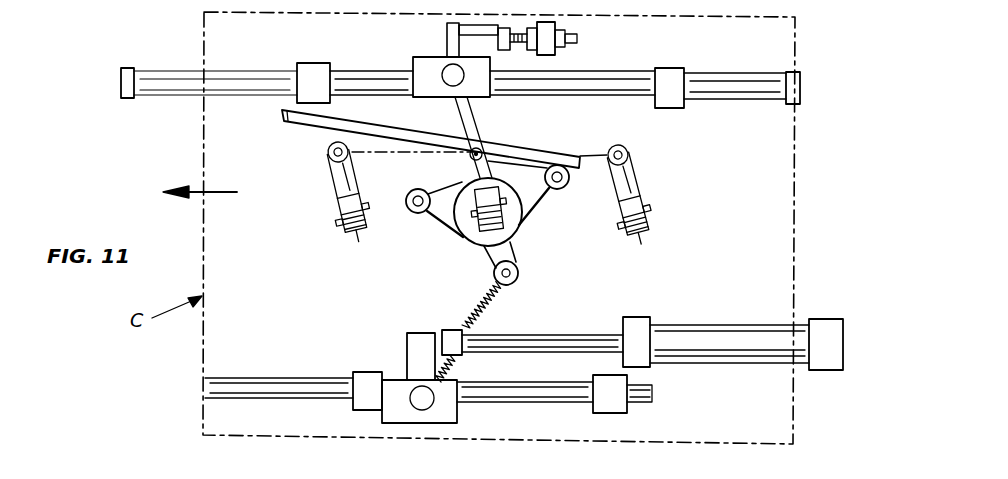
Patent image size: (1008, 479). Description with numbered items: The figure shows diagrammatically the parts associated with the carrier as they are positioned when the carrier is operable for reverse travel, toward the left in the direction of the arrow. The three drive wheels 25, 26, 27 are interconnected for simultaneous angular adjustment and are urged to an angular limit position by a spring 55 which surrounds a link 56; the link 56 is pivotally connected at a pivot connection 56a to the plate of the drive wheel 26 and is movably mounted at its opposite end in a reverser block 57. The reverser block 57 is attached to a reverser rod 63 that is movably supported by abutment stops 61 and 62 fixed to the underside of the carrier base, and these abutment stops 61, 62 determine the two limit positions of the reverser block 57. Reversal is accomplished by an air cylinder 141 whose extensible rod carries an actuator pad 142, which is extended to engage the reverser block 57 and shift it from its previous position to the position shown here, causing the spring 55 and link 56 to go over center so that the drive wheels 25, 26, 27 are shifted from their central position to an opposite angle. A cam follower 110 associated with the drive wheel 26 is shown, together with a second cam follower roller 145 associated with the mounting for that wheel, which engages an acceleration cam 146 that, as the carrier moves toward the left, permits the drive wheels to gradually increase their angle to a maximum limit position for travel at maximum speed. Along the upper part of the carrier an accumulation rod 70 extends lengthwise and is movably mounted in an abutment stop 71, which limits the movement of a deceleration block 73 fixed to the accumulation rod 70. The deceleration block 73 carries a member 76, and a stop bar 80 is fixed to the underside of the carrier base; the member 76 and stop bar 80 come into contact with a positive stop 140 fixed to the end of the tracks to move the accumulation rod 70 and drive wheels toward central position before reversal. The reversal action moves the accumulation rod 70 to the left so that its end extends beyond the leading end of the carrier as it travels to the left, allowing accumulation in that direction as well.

The accumulation rod 70 is at (235, 80).
The abutment stop 71 is at (678, 106).
The deceleration block 73 is at (430, 90).
The member 76 is at (446, 42).
The stop bar 80 is at (475, 30).
The positive stop 140 is at (556, 56).
The acceleration cam 146 is at (525, 150).
The drive wheel 25 is at (345, 228).
The drive wheel 27 is at (648, 228).
The cam follower 110 is at (415, 212).
The pivot pin 145 is at (557, 190).
The drive wheel 26 is at (482, 232).
The pivot connection 56a is at (518, 273).
The link 56 is at (477, 302).
The spring 55 is at (490, 316).
The actuator pad 142 is at (463, 351).
The air cylinder 141 is at (705, 335).
The reverser rod 63 is at (248, 386).
The abutment stop 61 is at (371, 377).
The reverser block 57 is at (447, 413).
The abutment stop 62 is at (612, 408).